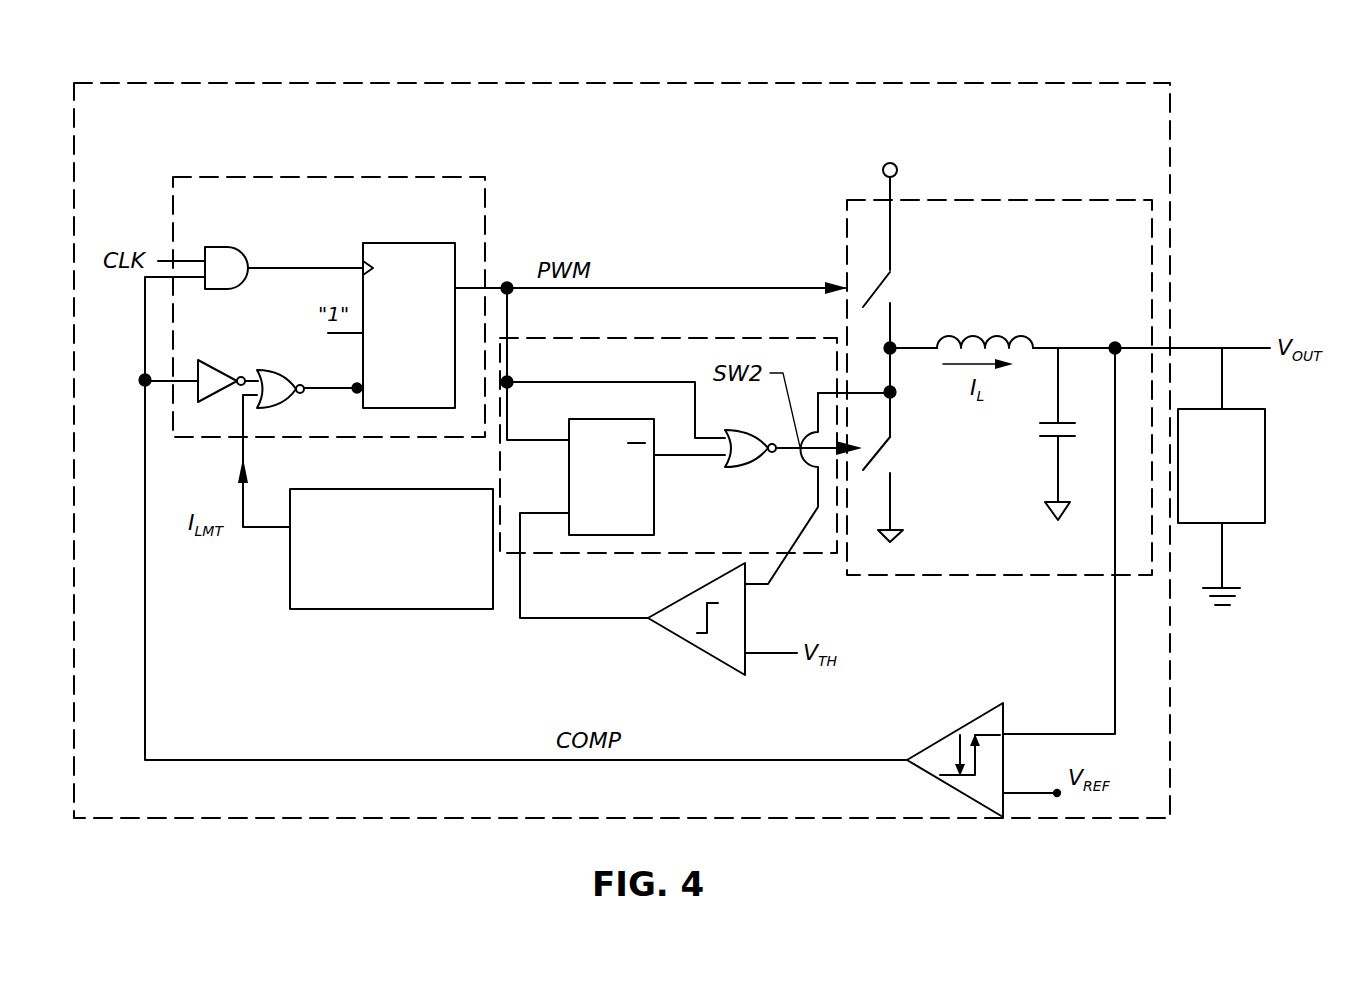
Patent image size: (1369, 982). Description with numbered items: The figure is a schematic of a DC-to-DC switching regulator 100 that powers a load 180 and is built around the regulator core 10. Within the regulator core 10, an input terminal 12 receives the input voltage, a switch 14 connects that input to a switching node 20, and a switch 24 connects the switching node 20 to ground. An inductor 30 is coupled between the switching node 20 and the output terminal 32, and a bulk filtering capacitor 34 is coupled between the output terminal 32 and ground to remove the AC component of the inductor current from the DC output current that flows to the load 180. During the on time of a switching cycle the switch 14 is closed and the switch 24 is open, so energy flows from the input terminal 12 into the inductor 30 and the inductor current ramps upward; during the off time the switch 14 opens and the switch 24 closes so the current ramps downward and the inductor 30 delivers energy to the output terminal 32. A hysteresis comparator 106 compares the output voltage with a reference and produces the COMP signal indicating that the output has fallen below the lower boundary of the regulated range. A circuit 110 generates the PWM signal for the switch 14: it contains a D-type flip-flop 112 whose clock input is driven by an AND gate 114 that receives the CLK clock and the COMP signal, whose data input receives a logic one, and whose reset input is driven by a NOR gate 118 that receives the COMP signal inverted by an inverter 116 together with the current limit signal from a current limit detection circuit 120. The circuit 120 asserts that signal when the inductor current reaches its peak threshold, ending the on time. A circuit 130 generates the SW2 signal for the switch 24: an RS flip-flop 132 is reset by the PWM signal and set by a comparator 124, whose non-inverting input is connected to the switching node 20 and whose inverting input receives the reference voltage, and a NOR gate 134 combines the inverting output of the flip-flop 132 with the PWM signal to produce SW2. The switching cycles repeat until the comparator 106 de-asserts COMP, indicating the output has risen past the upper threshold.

The DC-to-DC switching regulator 100 is at (574, 78).
The circuit 110 is at (330, 282).
The D-type flip-flop 112 is at (455, 308).
The AND gate 114 is at (256, 248).
The inverter 116 is at (247, 362).
The NOR gate 118 is at (314, 419).
The current limit detection circuit 120 is at (391, 573).
The comparator 124 is at (666, 624).
The circuit 130 is at (668, 402).
The RS flip-flop 132 is at (658, 477).
The NOR gate 134 is at (812, 520).
The input terminal 12 is at (933, 145).
The switch 14 is at (844, 262).
The regulator core 10 is at (1071, 188).
The switching node 20 is at (935, 310).
The switch 24 is at (824, 445).
The inductor 30 is at (1011, 308).
The output terminal 32 is at (1176, 303).
The capacitor 34 is at (1011, 434).
The hysteresis comparator 106 is at (920, 748).
The load 180 is at (1269, 476).